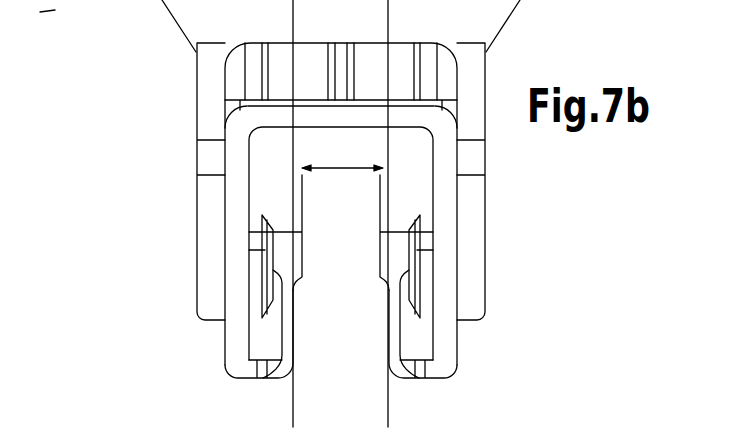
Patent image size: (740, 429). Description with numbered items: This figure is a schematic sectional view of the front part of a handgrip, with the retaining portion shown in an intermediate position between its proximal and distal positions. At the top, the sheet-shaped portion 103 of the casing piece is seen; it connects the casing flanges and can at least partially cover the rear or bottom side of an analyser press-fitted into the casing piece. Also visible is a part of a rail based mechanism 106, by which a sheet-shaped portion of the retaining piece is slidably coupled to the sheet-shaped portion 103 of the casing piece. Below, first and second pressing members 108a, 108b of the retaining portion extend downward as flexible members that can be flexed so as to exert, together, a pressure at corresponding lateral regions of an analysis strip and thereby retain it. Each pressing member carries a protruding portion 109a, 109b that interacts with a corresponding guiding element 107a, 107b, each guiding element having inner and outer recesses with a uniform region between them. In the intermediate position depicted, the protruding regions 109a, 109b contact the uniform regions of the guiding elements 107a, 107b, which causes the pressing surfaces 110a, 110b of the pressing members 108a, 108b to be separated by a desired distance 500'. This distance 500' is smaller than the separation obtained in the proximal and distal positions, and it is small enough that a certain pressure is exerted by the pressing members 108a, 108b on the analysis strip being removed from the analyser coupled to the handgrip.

The sheet-shaped portion 103 is at (192, 11).
The rail based mechanism part 106 is at (257, 78).
The first guiding element 107a is at (265, 240).
The second guiding element 107b is at (460, 240).
The first pressing member 108a is at (282, 343).
The second pressing member 108b is at (460, 344).
The protruding portion of first pressing member 109a is at (263, 270).
The protruding portion of second pressing member 109b is at (460, 270).
The first pressing surface 110a is at (303, 280).
The second pressing surface 110b is at (381, 277).
The distance 500' is at (342, 155).